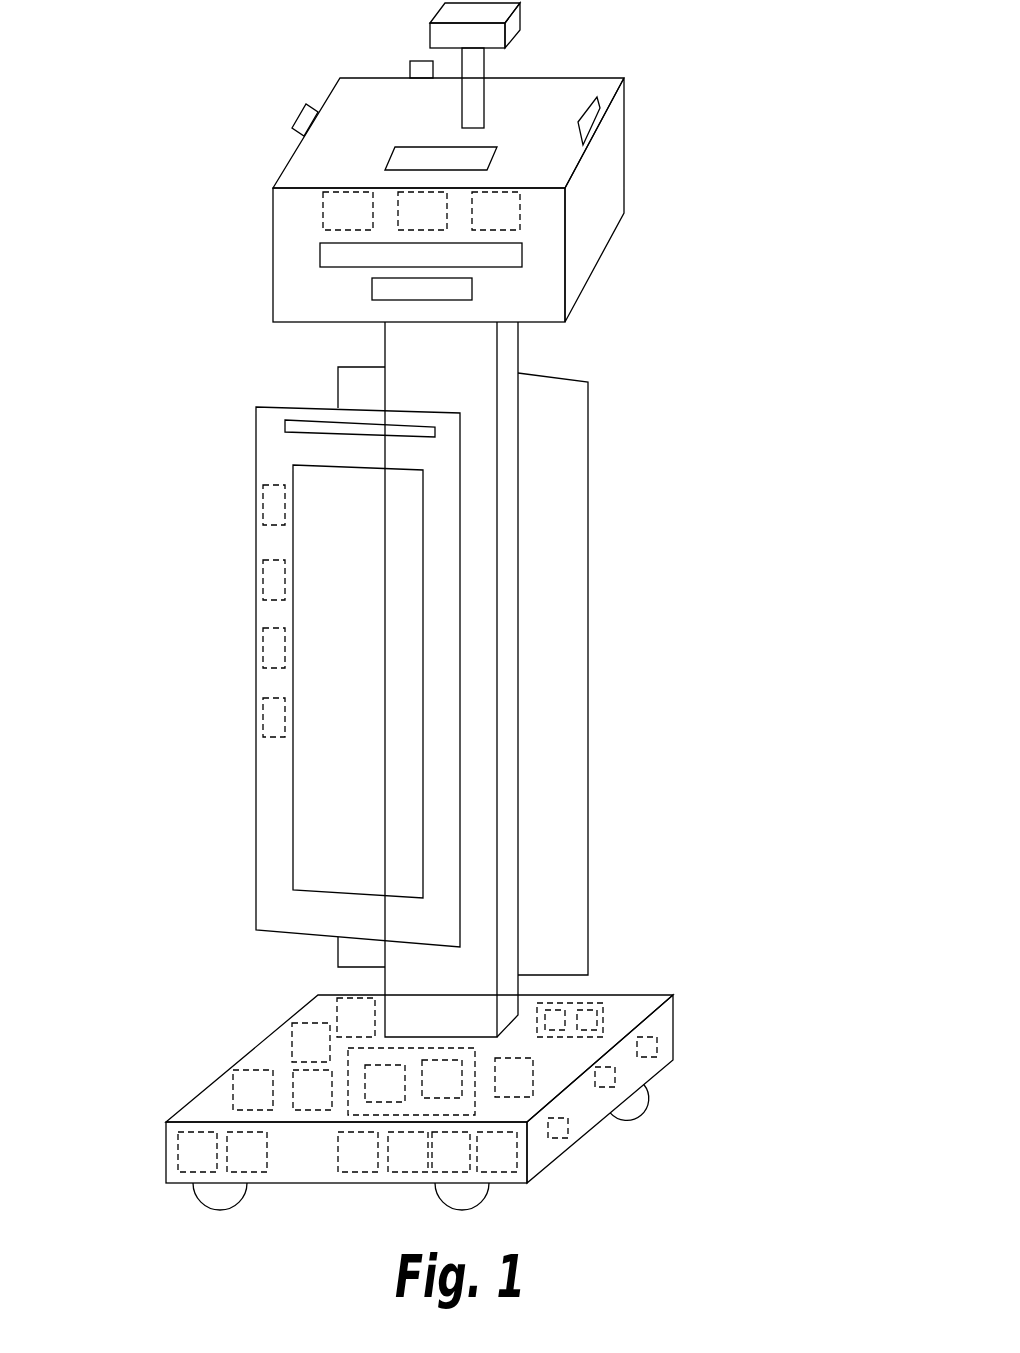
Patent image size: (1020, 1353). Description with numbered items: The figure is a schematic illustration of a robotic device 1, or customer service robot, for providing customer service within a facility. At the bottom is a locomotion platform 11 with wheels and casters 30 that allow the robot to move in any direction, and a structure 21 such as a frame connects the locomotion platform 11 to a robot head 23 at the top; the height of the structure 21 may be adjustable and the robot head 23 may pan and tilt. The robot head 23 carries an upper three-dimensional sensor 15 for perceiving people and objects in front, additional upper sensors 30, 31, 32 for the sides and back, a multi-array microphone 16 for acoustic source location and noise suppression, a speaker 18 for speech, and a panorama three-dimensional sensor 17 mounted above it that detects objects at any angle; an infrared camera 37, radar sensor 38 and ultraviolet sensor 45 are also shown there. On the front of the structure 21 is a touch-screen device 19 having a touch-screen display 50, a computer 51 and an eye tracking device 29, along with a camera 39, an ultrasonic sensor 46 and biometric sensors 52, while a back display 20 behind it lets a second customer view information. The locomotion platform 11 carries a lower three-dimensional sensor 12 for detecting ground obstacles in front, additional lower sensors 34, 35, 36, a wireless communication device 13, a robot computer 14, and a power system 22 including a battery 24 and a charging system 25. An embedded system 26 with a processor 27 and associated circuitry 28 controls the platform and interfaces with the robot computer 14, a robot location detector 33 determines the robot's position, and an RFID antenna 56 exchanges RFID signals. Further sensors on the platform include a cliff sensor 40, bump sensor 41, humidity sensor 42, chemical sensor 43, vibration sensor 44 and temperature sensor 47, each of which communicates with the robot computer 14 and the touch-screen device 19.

The robotic device 1 is at (165, 152).
The locomotion platform 11 is at (593, 1103).
The lower 3D sensor 12 is at (525, 1088).
The wireless communication device 13 is at (323, 1101).
The robot computer 14 is at (322, 1053).
The upper 3D sensor 15 is at (508, 257).
The multi-array microphone 16 is at (467, 155).
The panorama 3D sensor 17 is at (517, 25).
The speaker 18 is at (455, 292).
The touch-screen device 19 is at (267, 452).
The back display 20 is at (567, 600).
The structure 21 is at (425, 975).
The power system 22 is at (570, 1005).
The robot head 23 is at (275, 265).
The battery 24 is at (587, 1022).
The charging system 25 is at (613, 1078).
The embedded system 26 is at (473, 1105).
The processor 27 is at (396, 1094).
The associated circuitry 28 is at (453, 1090).
The eye tracking device 29 is at (300, 425).
The wheels and casters / additional upper sensor 30 is at (305, 118).
The additional upper sensor 31 is at (585, 118).
The additional upper sensor 32 is at (425, 70).
The robot location detector 33 is at (419, 1163).
The additional lower sensor 34 is at (264, 1101).
The additional lower sensor 35 is at (652, 1043).
The additional lower sensor 36 is at (367, 1028).
The infrared camera 37 is at (359, 223).
The radar sensor 38 is at (433, 223).
The camera 39 is at (267, 513).
The cliff sensor 40 is at (208, 1163).
The bump sensor 41 is at (258, 1163).
The humidity sensor 42 is at (462, 1163).
The chemical sensor 43 is at (508, 1163).
The vibration sensor 44 is at (563, 1135).
The ultraviolet sensor 45 is at (507, 223).
The ultrasonic sensor 46 is at (267, 587).
The temperature sensor 47 is at (369, 1163).
The touch-screen display 50 is at (369, 666).
The computer 51 is at (267, 647).
The biometric sensors 52 is at (267, 722).
The RFID antenna 56 is at (557, 1025).